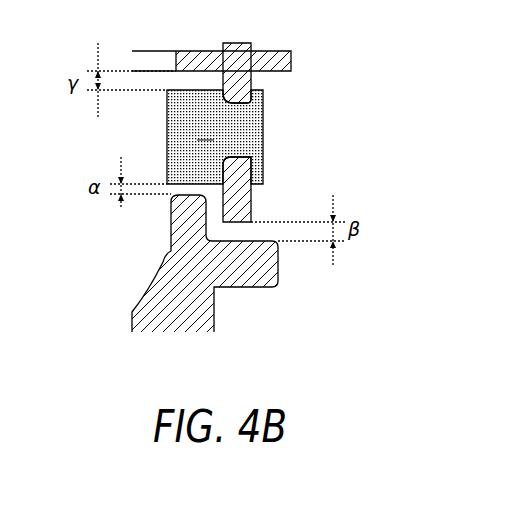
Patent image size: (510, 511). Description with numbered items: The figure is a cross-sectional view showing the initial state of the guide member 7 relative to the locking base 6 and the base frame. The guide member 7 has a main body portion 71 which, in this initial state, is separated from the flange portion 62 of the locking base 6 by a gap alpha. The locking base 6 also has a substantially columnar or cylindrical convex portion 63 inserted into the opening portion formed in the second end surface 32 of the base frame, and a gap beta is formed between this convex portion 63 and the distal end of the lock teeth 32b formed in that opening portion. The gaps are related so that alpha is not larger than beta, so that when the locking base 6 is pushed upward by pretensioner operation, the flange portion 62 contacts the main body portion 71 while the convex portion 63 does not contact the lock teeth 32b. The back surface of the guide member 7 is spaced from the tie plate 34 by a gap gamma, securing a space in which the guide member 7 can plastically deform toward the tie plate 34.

The tie plate 34 is at (193, 51).
The guide member 7 is at (201, 137).
The main body portion 71 is at (206, 133).
The second end surface 32 is at (267, 136).
The lock teeth 32b is at (243, 222).
The flange portion 62 is at (171, 212).
The convex portion 63 is at (278, 262).
The locking base 6 is at (200, 263).